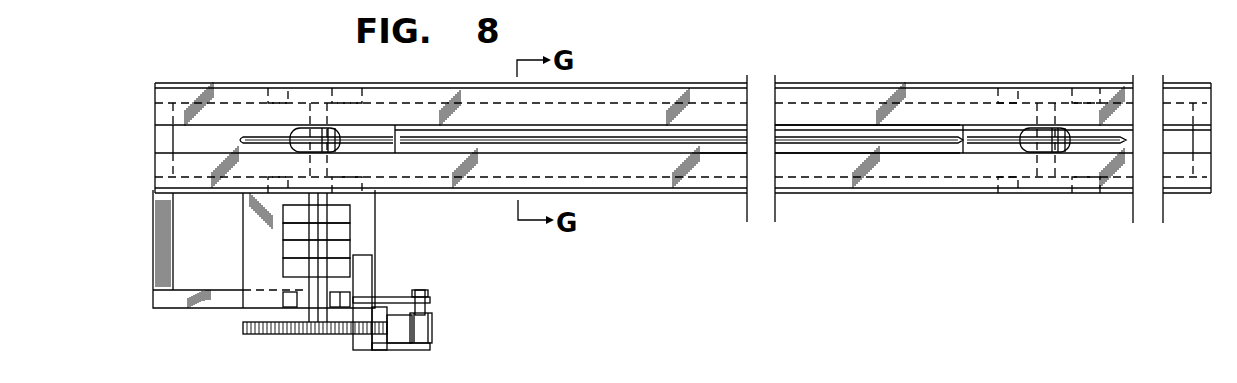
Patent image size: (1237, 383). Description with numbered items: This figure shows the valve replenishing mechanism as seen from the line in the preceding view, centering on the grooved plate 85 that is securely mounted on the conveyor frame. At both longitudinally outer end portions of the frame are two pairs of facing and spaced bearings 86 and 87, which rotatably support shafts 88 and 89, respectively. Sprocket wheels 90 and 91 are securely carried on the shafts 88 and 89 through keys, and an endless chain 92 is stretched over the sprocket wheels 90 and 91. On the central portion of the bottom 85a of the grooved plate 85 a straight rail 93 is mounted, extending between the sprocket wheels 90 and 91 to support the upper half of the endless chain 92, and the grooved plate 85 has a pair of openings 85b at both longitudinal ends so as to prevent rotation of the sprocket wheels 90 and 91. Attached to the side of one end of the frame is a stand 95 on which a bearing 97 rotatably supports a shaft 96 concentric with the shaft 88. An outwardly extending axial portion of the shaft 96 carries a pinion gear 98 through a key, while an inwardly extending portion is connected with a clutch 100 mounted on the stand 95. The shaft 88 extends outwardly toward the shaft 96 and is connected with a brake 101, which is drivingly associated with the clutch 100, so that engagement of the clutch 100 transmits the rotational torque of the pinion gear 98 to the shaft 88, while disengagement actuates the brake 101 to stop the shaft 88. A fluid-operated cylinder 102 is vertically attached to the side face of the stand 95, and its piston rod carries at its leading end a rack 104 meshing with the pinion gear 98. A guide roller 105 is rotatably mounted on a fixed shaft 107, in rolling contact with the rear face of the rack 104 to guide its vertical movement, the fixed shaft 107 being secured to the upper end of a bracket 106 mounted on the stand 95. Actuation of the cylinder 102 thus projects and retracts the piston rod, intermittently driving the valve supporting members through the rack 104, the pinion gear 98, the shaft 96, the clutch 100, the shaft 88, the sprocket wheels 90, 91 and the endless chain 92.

The grooved plate 85 is at (1183, 186).
The bottom 85a is at (838, 154).
The openings 85b is at (373, 152).
The bearings 86 is at (303, 93).
The bearings 87 is at (1053, 183).
The shaft 88 is at (330, 113).
The shaft 89 is at (1038, 163).
The sprocket wheel 90 is at (237, 140).
The sprocket wheel 91 is at (1116, 143).
The endless chain 92 is at (630, 142).
The straight rail 93 is at (722, 145).
The stand 95 is at (153, 247).
The shaft 96 is at (329, 315).
The bearing 97 is at (302, 292).
The pinion gear 98 is at (243, 330).
The clutch 100 is at (288, 249).
The brake 101 is at (288, 231).
The fluid-operated cylinder 102 is at (423, 350).
The rack 104 is at (400, 338).
The guide roller 105 is at (432, 328).
The bracket 106 is at (393, 298).
The fixed shaft 107 is at (428, 300).